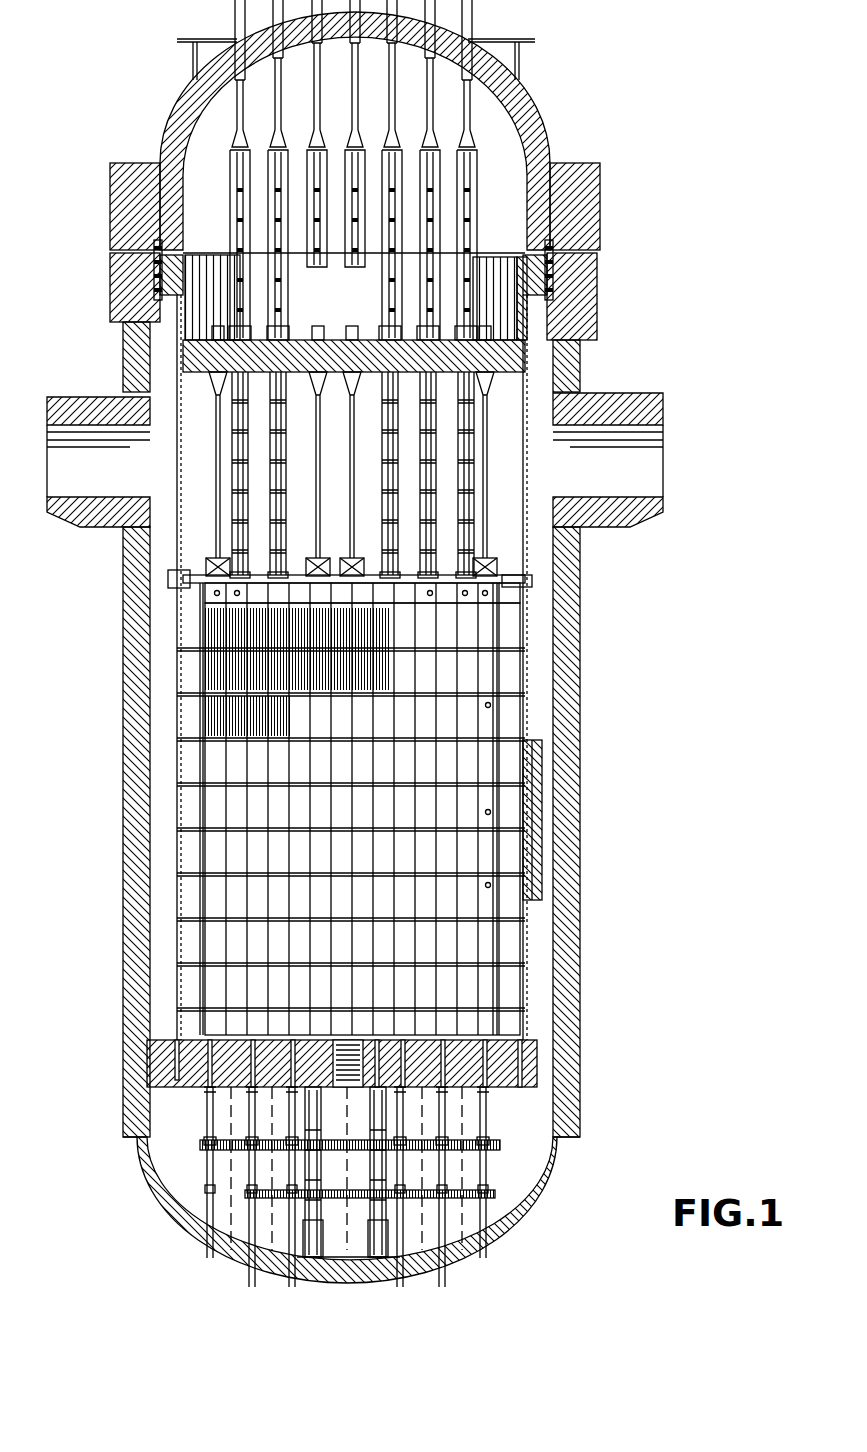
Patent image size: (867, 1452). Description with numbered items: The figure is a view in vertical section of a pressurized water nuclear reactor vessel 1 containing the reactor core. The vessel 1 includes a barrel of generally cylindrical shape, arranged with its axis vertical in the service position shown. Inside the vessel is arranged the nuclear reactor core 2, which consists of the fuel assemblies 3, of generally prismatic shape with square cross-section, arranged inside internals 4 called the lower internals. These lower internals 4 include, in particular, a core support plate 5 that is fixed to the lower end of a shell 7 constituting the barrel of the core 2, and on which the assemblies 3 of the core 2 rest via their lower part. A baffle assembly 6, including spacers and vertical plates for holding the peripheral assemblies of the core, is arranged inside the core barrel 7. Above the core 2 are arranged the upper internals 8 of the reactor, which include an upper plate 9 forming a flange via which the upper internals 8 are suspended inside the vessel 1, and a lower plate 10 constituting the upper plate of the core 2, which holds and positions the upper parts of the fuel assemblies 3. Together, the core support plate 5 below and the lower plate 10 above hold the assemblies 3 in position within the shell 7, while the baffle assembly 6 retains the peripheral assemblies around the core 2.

The pressurized water nuclear reactor vessel 1 is at (587, 902).
The nuclear reactor core 2 is at (362, 819).
The fuel assemblies 3 is at (445, 850).
The internals 4 is at (533, 675).
The core support plate 5 is at (270, 1048).
The baffle assembly 6 is at (513, 733).
The shell 7 is at (523, 990).
The upper internals 8 is at (475, 413).
The upper plate 9 is at (513, 350).
The lower plate 10 is at (475, 583).